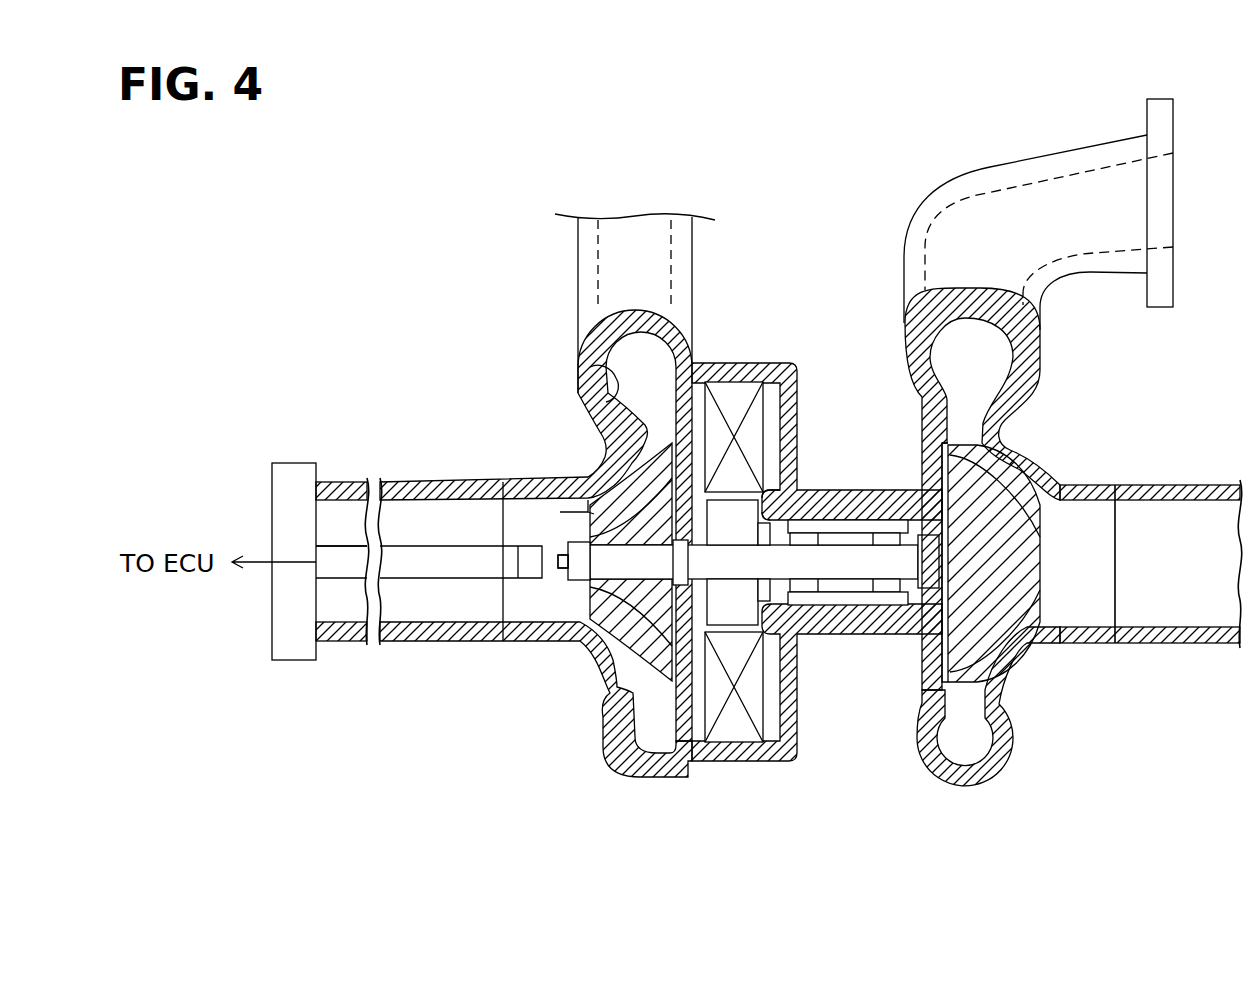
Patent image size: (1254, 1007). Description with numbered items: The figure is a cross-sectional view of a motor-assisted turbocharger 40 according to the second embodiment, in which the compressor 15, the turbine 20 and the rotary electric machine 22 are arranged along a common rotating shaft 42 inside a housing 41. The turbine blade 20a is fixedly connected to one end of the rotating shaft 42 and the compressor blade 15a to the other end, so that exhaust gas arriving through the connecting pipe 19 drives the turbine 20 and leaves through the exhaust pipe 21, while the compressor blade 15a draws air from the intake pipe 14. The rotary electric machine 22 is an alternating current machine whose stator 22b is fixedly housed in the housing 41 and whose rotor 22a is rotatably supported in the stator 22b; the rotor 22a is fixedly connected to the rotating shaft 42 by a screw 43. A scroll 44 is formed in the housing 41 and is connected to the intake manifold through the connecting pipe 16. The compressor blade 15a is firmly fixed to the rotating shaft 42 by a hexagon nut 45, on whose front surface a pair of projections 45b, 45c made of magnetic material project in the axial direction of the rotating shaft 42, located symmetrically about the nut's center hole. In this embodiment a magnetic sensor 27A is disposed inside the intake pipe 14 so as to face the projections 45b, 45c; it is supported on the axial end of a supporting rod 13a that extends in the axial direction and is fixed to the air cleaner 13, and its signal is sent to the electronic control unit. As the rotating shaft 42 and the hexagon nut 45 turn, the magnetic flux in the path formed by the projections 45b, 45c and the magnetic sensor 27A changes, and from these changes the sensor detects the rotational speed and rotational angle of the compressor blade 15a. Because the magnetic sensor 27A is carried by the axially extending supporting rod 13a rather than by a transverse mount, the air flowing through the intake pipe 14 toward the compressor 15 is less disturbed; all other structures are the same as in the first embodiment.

The air cleaner 13 is at (297, 463).
The supporting rod 13a is at (340, 578).
The intake pipe 14 is at (408, 482).
The compressor 15 is at (538, 437).
The compressor blade 15a is at (560, 505).
The connecting pipe 16 is at (578, 265).
The connecting pipe 19 is at (1097, 267).
The turbine 20 is at (1050, 449).
The turbine blade 20a is at (1043, 562).
The exhaust pipe 21 is at (1180, 643).
The rotary electric machine 22 is at (830, 815).
The rotor 22a is at (758, 612).
The stator 22b is at (722, 744).
The magnetic sensor 27A is at (532, 580).
The motor-assisted turbocharger 40 is at (786, 313).
The housing 41 is at (618, 757).
The rotating shaft 42 is at (857, 580).
The screw 43 is at (765, 512).
The scroll 44 is at (598, 367).
The hexagon nut 45 is at (590, 582).
The projection 45b is at (562, 590).
The projection 45c is at (565, 584).